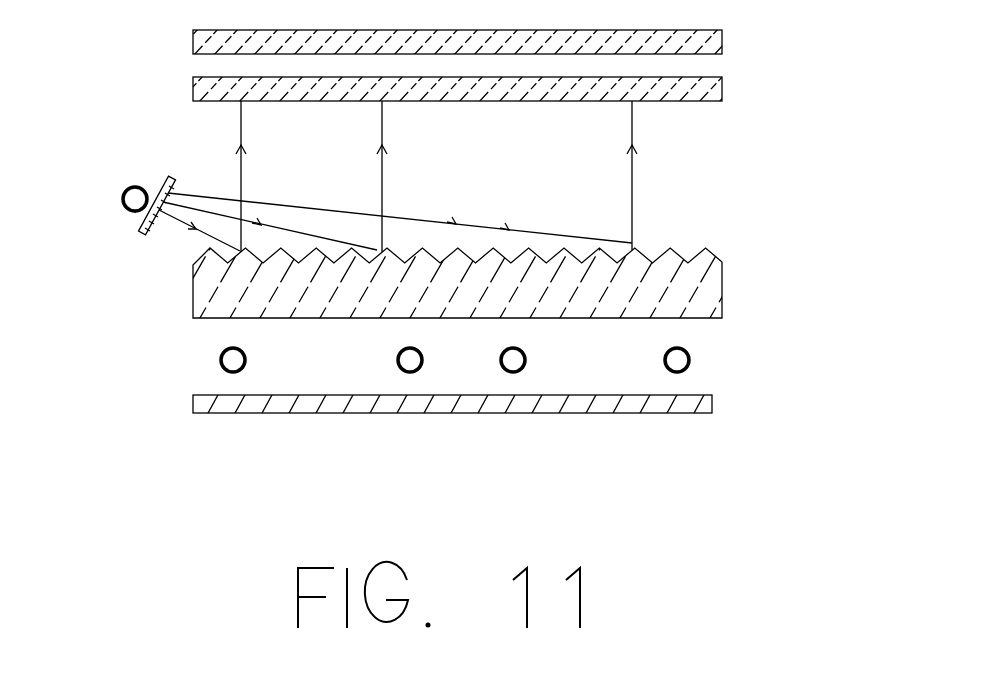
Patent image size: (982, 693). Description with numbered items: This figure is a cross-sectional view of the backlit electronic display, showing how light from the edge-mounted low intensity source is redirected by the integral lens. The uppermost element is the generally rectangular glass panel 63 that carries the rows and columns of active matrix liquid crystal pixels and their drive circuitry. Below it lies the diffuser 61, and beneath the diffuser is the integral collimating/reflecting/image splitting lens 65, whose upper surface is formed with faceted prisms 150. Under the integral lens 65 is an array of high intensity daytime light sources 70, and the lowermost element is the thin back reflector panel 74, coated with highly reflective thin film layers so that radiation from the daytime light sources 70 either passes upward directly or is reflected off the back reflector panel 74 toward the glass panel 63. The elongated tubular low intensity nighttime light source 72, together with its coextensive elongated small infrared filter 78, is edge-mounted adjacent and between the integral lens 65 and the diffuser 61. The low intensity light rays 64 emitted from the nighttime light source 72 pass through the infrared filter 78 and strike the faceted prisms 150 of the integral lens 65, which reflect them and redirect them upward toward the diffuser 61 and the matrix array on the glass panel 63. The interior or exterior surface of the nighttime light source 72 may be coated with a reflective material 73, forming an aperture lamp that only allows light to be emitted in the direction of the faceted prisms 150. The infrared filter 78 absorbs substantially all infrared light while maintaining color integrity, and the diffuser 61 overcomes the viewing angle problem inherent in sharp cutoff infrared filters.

The glass panel 63 is at (723, 42).
The diffuser 61 is at (723, 88).
The integral collimating/reflecting/image splitting lens 65 is at (723, 300).
The low intensity light rays 64 is at (330, 242).
The faceted prisms 150 is at (435, 258).
The low intensity nighttime light source 72 is at (123, 193).
The infrared filter 78 is at (173, 182).
The reflective material 73 is at (135, 212).
The high intensity daytime light sources 70 is at (664, 361).
The back reflector panel 74 is at (713, 400).